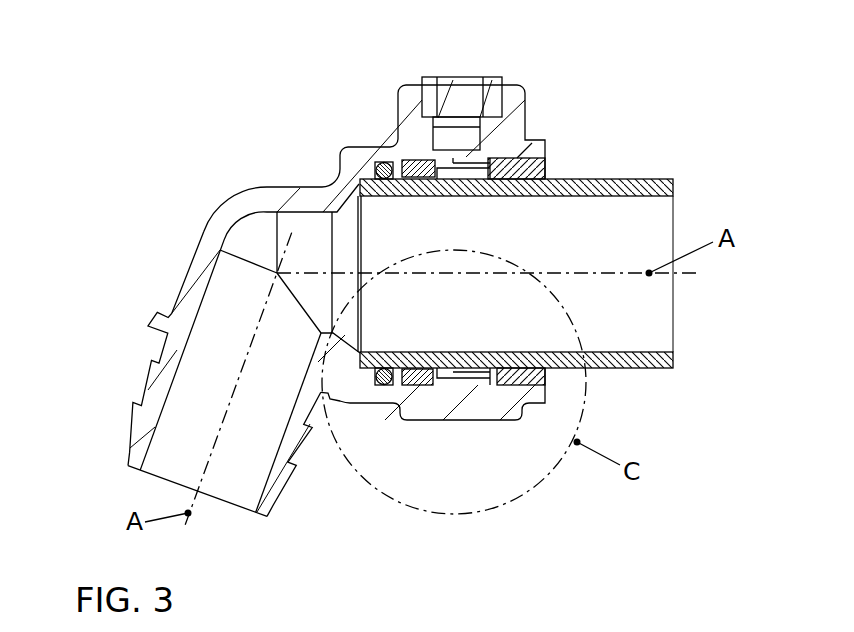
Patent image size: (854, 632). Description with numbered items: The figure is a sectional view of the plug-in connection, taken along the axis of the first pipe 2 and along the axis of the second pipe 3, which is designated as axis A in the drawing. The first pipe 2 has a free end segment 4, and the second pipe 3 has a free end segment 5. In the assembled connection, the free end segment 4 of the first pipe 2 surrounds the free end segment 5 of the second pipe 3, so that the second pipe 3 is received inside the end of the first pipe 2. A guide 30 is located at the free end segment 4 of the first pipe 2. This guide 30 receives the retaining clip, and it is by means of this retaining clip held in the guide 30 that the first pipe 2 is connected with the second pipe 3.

The first pipe 2 is at (213, 217).
The second pipe 3 is at (655, 180).
The free end segment of the first pipe 4 is at (360, 62).
The free end segment of the second pipe 5 is at (360, 62).
The guide 30 is at (484, 137).